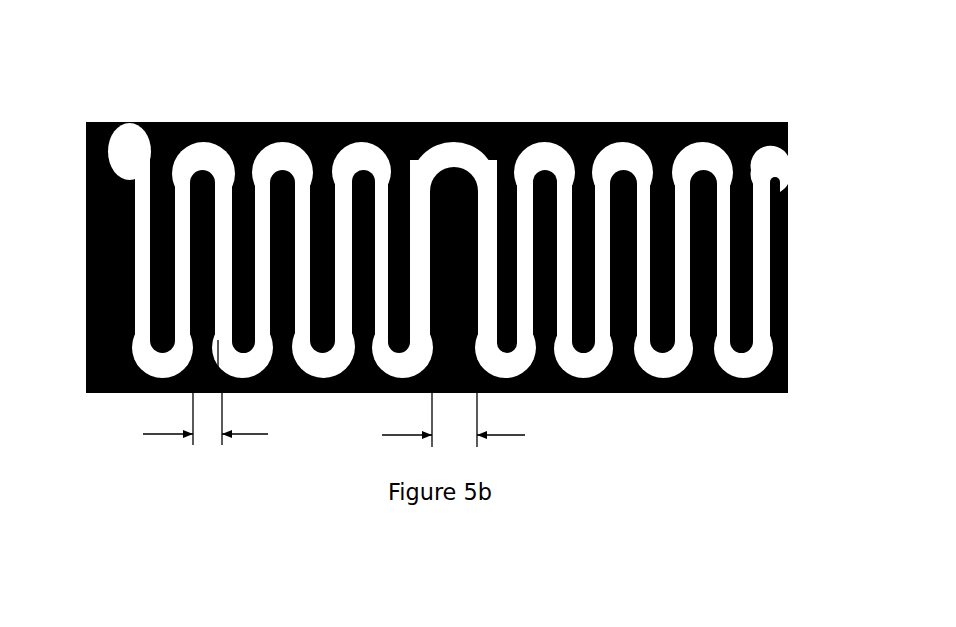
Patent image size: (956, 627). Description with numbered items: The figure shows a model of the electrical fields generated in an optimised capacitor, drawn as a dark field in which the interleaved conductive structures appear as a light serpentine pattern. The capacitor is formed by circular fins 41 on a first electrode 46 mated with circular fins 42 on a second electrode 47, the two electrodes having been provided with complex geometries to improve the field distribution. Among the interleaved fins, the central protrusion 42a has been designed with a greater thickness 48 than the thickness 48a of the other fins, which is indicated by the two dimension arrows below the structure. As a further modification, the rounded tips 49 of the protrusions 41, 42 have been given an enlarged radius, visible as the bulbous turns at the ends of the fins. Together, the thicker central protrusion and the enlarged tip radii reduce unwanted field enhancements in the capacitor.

The circular fins 41 is at (745, 220).
The circular fins 42 is at (707, 272).
The central protrusion 42a is at (427, 330).
The first electrode 46 is at (663, 122).
The second electrode 47 is at (568, 393).
The thickness 48 is at (518, 445).
The thickness of the other fins 48a is at (137, 440).
The rounded tips 49 is at (443, 152).